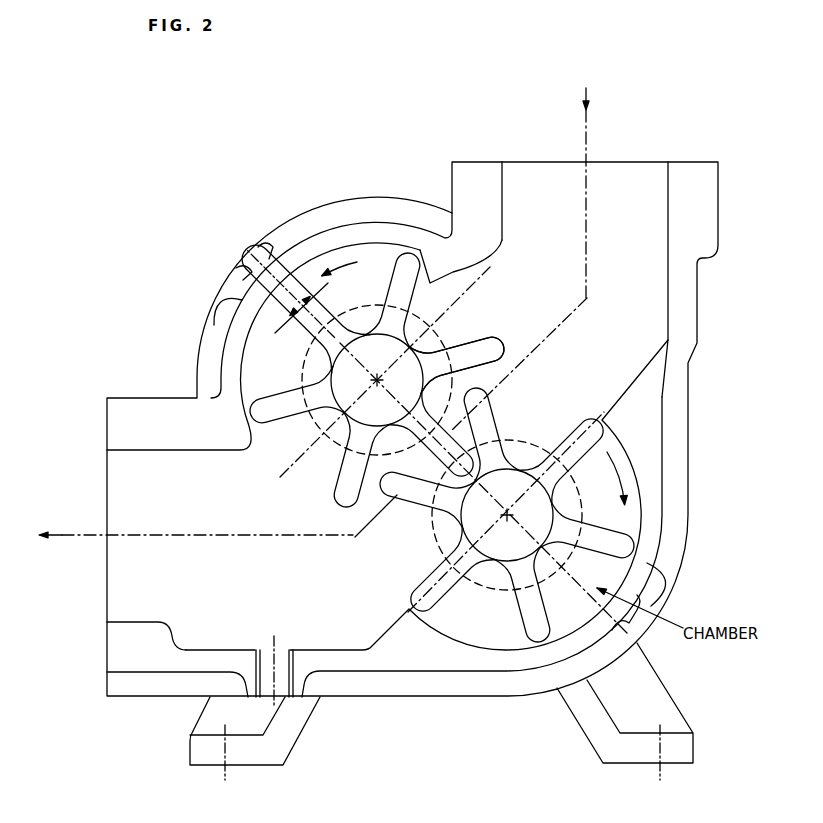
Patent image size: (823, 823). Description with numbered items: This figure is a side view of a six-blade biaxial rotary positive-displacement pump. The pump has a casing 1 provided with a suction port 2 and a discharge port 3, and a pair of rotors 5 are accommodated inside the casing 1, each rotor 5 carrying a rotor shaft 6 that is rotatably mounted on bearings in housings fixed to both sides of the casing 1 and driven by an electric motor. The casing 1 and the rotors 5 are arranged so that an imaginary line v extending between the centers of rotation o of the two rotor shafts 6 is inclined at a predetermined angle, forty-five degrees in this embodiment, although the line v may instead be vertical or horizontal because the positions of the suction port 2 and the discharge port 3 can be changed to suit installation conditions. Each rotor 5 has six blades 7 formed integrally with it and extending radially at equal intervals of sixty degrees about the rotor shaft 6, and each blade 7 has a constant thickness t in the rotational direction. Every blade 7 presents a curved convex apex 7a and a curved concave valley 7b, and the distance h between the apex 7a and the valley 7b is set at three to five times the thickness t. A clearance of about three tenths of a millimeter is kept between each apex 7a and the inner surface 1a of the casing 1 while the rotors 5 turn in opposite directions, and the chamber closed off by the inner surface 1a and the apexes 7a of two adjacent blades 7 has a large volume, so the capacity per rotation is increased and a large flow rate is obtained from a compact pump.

The casing 1 is at (483, 163).
The inner surface of the casing 1a is at (418, 253).
The suction port 2 is at (547, 167).
The discharge port 3 is at (112, 470).
The rotor 5 is at (436, 424).
The rotor shaft 6 is at (335, 373).
The blade 7 is at (397, 270).
The curved convex apex 7a is at (258, 270).
The curved concave valley 7b is at (450, 343).
The imaginary line v is at (246, 248).
The thickness t is at (268, 300).
The rotation center o is at (377, 380).
The distance h is at (462, 282).